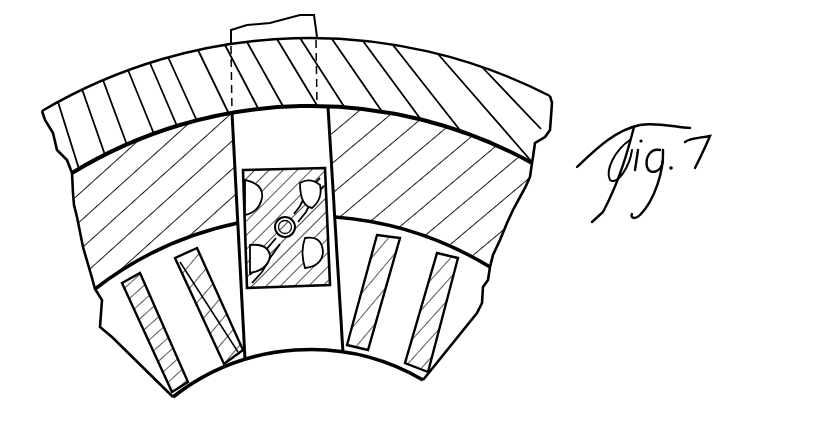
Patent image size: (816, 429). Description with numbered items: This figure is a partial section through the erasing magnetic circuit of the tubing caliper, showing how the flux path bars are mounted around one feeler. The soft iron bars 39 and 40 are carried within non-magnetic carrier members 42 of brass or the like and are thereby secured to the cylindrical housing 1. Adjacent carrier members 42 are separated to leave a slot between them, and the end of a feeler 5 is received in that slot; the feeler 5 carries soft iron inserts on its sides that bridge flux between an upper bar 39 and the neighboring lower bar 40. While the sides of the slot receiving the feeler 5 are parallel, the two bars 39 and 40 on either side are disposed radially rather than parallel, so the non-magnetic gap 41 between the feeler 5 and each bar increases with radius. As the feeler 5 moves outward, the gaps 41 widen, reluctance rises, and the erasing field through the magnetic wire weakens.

The housing 1 is at (467, 70).
The feeler 5 is at (258, 170).
The soft iron bar 39 is at (219, 338).
The soft iron bar 40 is at (141, 303).
The non-magnetic gap 41 is at (357, 309).
The non-magnetic carrier member 42 is at (497, 214).